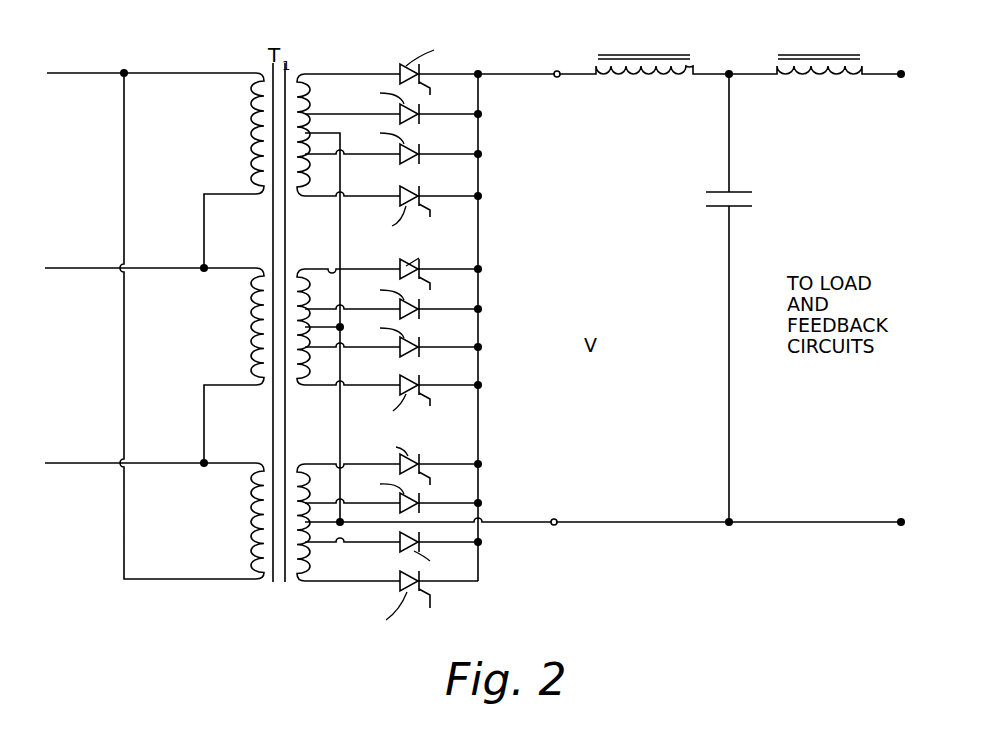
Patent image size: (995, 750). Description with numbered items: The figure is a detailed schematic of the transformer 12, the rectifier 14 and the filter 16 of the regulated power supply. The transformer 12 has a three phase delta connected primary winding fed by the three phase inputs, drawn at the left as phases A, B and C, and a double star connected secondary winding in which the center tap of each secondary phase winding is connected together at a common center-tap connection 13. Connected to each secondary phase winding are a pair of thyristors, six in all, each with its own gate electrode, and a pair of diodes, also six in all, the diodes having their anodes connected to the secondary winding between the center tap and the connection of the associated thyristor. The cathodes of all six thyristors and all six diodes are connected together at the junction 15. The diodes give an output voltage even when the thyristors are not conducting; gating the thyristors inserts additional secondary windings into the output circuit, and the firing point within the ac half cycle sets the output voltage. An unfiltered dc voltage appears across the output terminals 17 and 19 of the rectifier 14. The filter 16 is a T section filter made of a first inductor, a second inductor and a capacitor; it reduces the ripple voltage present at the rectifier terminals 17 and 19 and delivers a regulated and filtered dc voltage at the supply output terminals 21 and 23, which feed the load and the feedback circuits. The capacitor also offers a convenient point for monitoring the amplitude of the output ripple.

The transformer 12 is at (196, 40).
The secondary center-tap common connection 13 is at (338, 525).
The rectifier 14 is at (424, 40).
The junction 15 is at (480, 72).
The filter 16 is at (733, 44).
The output terminal 17 is at (559, 70).
The output terminal 19 is at (556, 526).
The supply output terminal 21 is at (902, 77).
The supply output terminal 23 is at (902, 525).